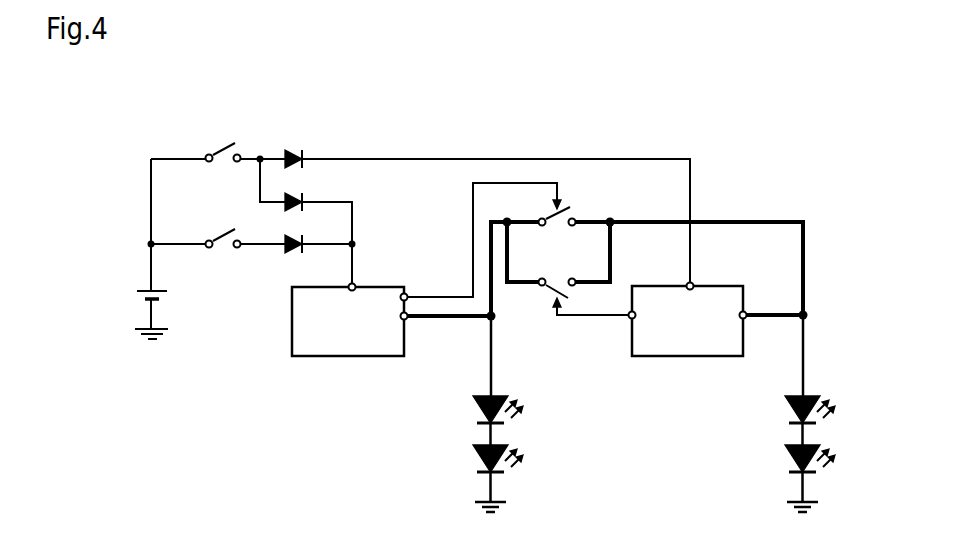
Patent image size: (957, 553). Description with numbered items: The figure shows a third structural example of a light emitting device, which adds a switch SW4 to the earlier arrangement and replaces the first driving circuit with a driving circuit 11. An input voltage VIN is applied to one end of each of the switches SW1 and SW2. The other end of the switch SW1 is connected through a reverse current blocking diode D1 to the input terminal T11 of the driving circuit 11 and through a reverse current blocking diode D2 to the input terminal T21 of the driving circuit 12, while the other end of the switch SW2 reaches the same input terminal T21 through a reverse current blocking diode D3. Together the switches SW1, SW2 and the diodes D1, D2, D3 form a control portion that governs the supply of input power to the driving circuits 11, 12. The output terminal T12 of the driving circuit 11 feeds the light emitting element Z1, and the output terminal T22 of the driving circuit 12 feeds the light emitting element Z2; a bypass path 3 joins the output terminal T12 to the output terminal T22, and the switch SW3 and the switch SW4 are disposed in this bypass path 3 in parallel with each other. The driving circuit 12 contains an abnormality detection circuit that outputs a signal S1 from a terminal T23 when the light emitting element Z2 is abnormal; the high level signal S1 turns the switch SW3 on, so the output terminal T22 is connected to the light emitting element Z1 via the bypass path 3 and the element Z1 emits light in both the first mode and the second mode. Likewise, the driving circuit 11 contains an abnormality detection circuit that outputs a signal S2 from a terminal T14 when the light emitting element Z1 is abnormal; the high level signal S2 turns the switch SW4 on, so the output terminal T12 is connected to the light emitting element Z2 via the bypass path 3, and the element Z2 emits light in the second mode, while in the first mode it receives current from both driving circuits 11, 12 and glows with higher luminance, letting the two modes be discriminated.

The input voltage VIN is at (142, 302).
The switch SW1 is at (223, 144).
The switch SW2 is at (223, 229).
The reverse current blocking diode D1 is at (306, 152).
The reverse current blocking diode D2 is at (306, 194).
The reverse current blocking diode D3 is at (306, 236).
The driving circuit 12 is at (386, 287).
The driving circuit 11 is at (728, 288).
The input terminal T21 is at (349, 286).
The output terminal T22 is at (408, 321).
The terminal T23 is at (409, 286).
The input terminal T11 is at (687, 283).
The output terminal T12 is at (747, 320).
The terminal T14 is at (629, 320).
The signal S1 is at (474, 269).
The signal S2 is at (591, 305).
The switch SW3 is at (553, 232).
The switch SW4 is at (591, 271).
The bypass path 3 is at (725, 222).
The light emitting element Z1 is at (834, 380).
The light emitting element Z2 is at (522, 380).